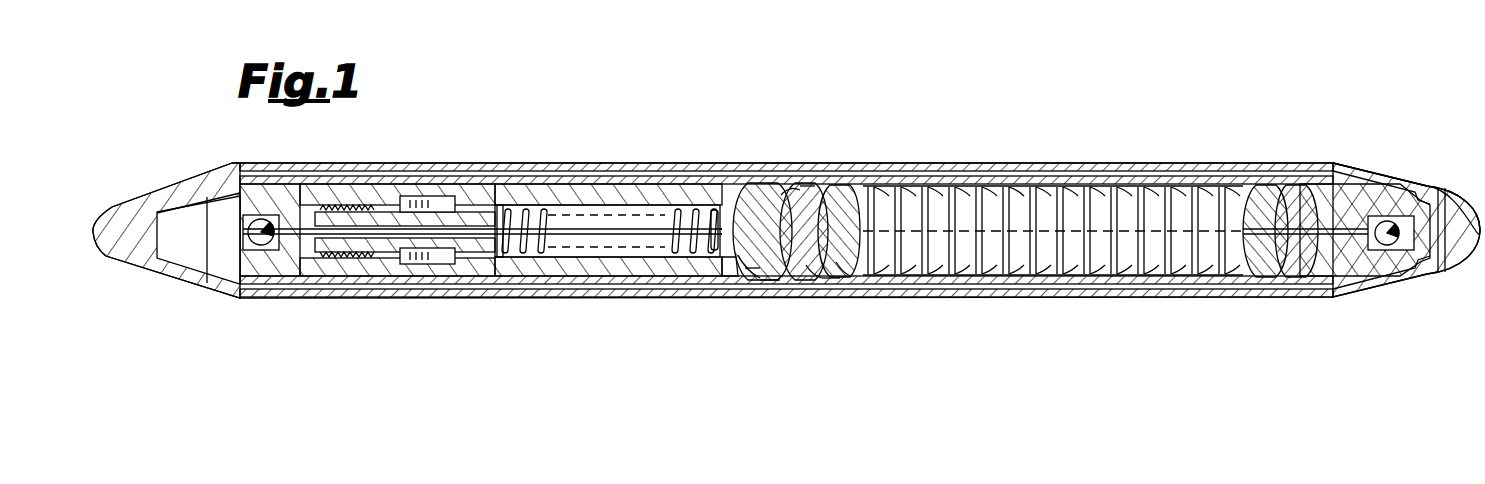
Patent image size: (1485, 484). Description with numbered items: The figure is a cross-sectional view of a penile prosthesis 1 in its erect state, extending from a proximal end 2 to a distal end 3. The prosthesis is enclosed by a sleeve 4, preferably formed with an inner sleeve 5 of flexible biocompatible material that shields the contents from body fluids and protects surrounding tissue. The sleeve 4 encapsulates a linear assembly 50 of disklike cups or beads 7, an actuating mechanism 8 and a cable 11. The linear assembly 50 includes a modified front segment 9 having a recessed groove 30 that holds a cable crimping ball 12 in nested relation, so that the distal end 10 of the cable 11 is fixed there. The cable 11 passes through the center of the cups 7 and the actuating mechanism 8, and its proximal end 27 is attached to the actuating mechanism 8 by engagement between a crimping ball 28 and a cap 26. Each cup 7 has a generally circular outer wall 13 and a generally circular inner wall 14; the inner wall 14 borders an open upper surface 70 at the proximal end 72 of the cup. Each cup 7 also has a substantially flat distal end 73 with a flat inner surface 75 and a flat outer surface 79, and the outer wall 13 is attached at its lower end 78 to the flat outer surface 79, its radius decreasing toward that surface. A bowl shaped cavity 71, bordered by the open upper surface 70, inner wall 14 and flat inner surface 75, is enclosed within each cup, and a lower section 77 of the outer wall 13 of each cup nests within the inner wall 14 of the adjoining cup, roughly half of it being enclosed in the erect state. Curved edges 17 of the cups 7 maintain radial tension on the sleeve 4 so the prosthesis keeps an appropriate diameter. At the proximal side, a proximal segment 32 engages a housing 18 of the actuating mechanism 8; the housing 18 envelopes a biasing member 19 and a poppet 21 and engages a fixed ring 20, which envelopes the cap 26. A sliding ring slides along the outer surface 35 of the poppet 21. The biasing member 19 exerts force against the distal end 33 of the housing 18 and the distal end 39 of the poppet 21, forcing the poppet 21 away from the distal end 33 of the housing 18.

The penile prosthesis 1 is at (432, 96).
The proximal end 2 is at (130, 202).
The distal end 3 is at (1398, 177).
The sleeve 4 is at (637, 162).
The inner sleeve 5 is at (587, 182).
The disklike cups or beads 7 is at (997, 280).
The actuating mechanism 8 is at (390, 255).
The modified front segment 9 is at (1327, 277).
The distal end of cable 10 is at (1312, 178).
The cable 11 is at (592, 230).
The cable crimping ball 12 is at (1384, 246).
The outer wall 13 is at (832, 185).
The inner wall 14 is at (807, 180).
The curved edges 17 is at (750, 272).
The housing 18 is at (610, 187).
The biasing member 19 is at (637, 250).
The fixed ring 20 is at (258, 198).
The poppet 21 is at (378, 210).
The cap 26 is at (300, 212).
The proximal end of cable 27 is at (305, 240).
The crimping ball 28 is at (256, 242).
The recessed groove 30 is at (1407, 252).
The proximal segment 32 is at (737, 185).
The distal end of housing 33 is at (740, 270).
The outer surface of poppet 35 is at (420, 255).
The distal end of poppet 39 is at (500, 250).
The linear assembly 50 is at (965, 188).
The open upper surface 70 is at (752, 190).
The bowl shaped cavity 71 is at (745, 265).
The proximal end of cup 72 is at (763, 190).
The flat distal end 73 is at (827, 278).
The flat inner surface 75 is at (812, 273).
The lower section of outer wall 77 is at (781, 190).
The lower end of outer wall 78 is at (760, 283).
The flat outer surface 79 is at (840, 273).